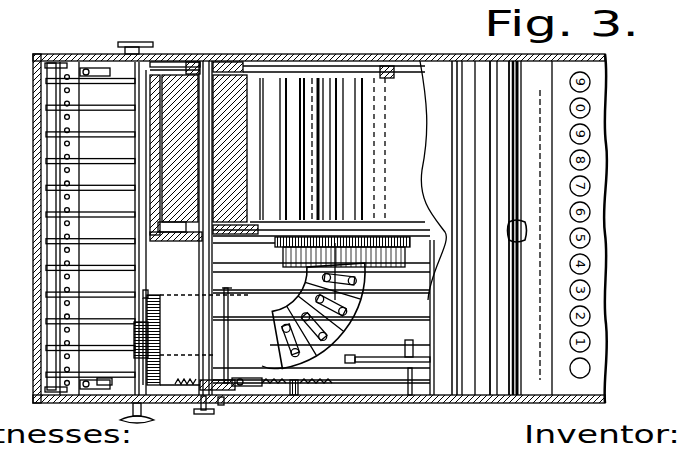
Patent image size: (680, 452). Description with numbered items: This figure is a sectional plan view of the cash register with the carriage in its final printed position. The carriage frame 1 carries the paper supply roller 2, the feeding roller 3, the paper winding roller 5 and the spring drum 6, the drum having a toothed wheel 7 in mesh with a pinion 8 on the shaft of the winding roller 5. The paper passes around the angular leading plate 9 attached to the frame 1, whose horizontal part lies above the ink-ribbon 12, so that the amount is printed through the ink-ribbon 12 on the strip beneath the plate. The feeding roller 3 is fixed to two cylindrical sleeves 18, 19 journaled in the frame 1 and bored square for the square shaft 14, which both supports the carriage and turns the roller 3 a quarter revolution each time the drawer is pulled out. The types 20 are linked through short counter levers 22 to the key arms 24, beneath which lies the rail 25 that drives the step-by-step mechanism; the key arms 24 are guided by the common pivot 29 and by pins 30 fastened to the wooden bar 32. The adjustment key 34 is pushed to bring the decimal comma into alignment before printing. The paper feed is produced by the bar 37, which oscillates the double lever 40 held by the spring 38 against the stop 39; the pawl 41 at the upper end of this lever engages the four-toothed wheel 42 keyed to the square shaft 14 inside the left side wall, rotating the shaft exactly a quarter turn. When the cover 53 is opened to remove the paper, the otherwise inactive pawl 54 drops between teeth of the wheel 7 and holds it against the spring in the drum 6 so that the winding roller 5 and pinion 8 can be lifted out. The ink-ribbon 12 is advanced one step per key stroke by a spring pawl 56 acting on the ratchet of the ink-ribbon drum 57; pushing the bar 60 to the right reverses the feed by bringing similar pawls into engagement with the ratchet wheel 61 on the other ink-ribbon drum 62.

The carriage frame 1 is at (322, 56).
The paper supply roller 2 is at (360, 143).
The feeding roller 3 is at (238, 56).
The paper winding roller 5 is at (334, 144).
The spring drum 6 is at (283, 254).
The toothed wheel 7 is at (410, 244).
The pinion 8 is at (250, 254).
The angular leading plate 9 is at (140, 200).
The ink-ribbon 12 is at (161, 340).
The square shaft 14 is at (203, 290).
The cylindrical sleeve 18 is at (220, 242).
The cylindrical sleeve 19 is at (183, 52).
The types 20 is at (275, 303).
The counter lever 22 is at (262, 355).
The key arm 24 is at (110, 215).
The rail 25 is at (392, 281).
The common pivot 29 is at (58, 280).
The pin 30 is at (80, 122).
The wooden bar 32 is at (75, 359).
The adjustment key 34 is at (574, 376).
The bar 37 is at (395, 397).
The spring 38 is at (242, 397).
The stop 39 is at (280, 397).
The double lever 40 is at (302, 395).
The pawl 41 is at (294, 397).
The toothed wheel 42 is at (198, 408).
The cover 53 is at (438, 228).
The pawl 54 is at (355, 361).
The spring pawl 56 is at (158, 290).
The ink-ribbon drum 57 is at (231, 290).
The bar 60 is at (118, 296).
The ratchet wheel 61 is at (163, 350).
The ink-ribbon drum 62 is at (160, 380).